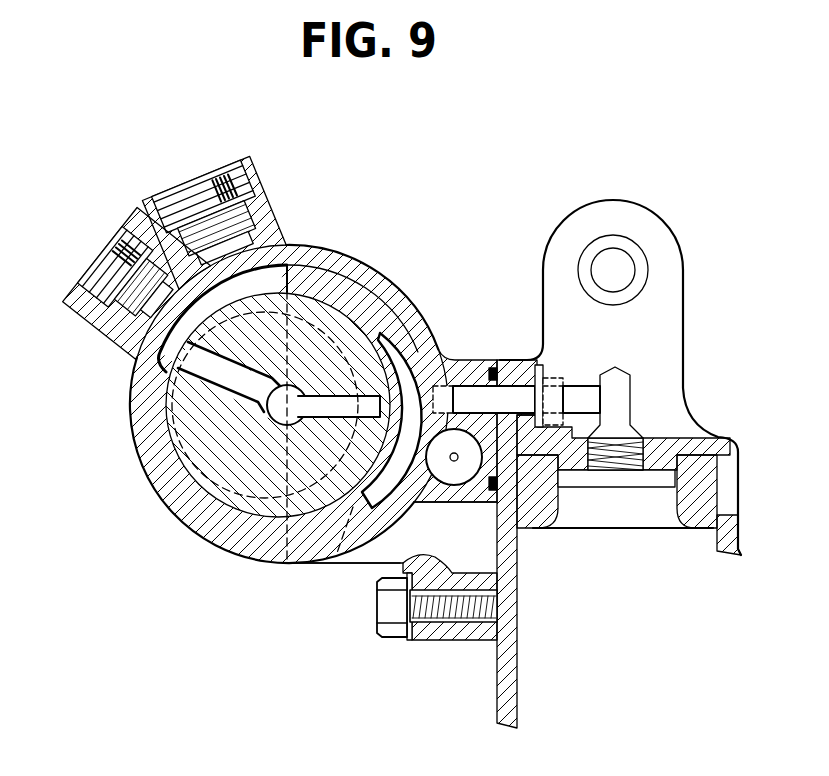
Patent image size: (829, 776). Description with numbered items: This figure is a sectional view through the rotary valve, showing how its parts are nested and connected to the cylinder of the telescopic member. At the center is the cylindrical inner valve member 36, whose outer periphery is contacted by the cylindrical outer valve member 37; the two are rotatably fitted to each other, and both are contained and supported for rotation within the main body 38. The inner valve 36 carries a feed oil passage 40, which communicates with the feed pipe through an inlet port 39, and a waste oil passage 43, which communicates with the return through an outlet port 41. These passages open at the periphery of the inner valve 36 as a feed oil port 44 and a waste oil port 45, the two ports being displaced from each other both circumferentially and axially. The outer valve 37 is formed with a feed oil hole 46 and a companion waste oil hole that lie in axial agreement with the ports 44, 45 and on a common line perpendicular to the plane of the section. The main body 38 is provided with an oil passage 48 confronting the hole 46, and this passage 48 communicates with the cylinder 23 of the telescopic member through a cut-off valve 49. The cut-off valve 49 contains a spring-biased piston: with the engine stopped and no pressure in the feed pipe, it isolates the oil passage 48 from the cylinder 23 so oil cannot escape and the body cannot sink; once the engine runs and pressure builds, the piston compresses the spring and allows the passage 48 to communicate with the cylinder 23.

The cylinder 23 is at (738, 446).
The inner valve member 36 is at (380, 288).
The outer valve member 37 is at (398, 330).
The main body 38 is at (349, 267).
The inlet port 39 is at (105, 267).
The feed oil passage 40 is at (172, 401).
The outlet port 41 is at (200, 178).
The waste oil passage 43 is at (168, 438).
The feed oil port 44 is at (410, 395).
The waste oil port 45 is at (360, 563).
The feed oil hole 46 is at (393, 524).
The oil passage 48 is at (452, 360).
The cut-off valve 49 is at (458, 481).